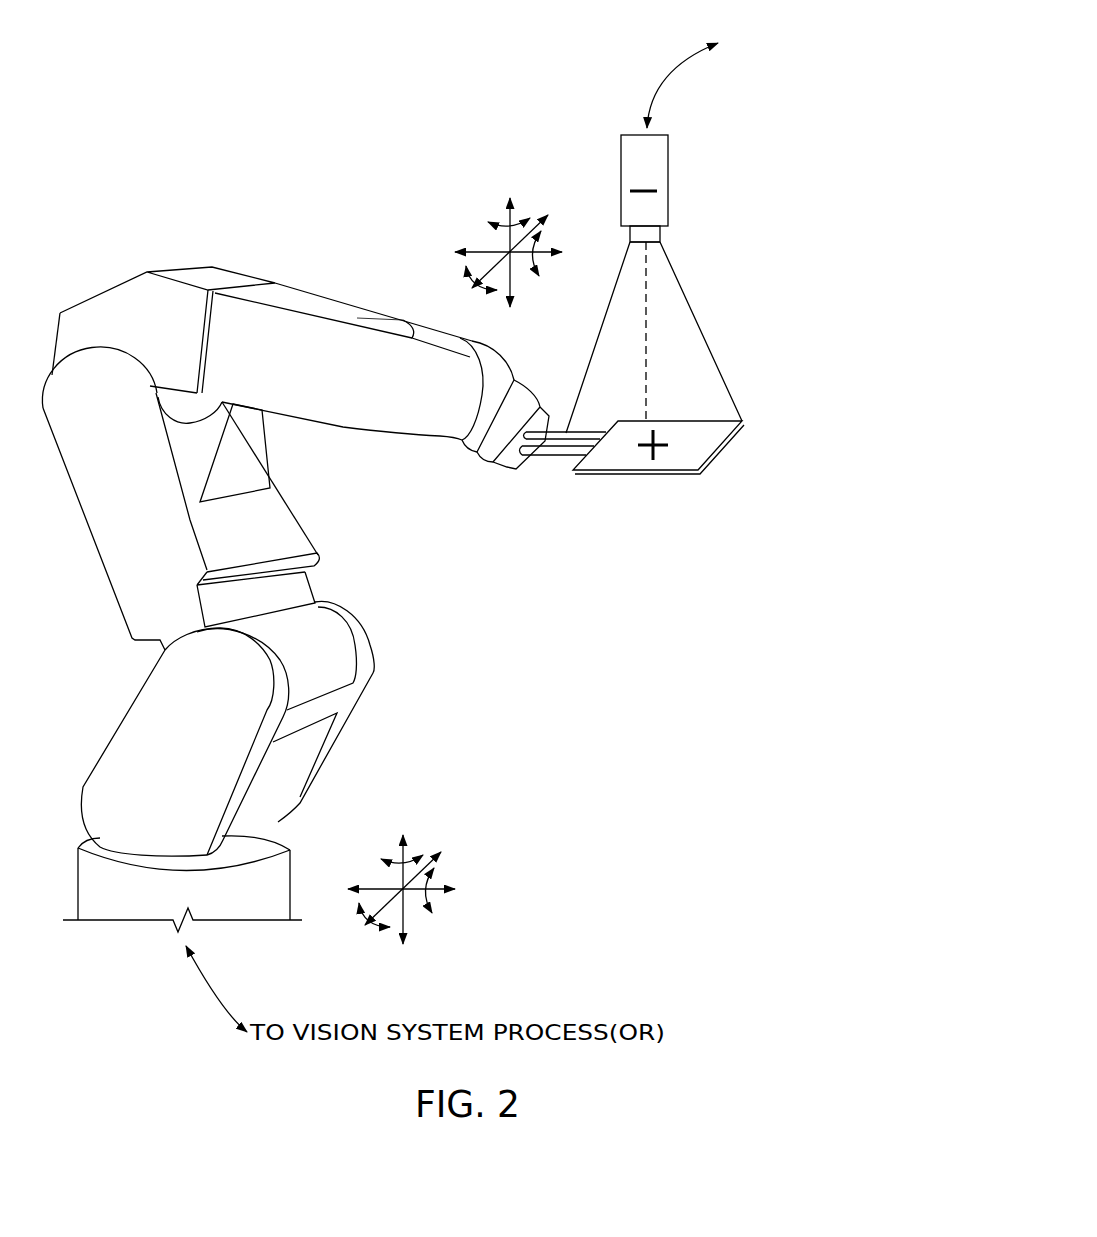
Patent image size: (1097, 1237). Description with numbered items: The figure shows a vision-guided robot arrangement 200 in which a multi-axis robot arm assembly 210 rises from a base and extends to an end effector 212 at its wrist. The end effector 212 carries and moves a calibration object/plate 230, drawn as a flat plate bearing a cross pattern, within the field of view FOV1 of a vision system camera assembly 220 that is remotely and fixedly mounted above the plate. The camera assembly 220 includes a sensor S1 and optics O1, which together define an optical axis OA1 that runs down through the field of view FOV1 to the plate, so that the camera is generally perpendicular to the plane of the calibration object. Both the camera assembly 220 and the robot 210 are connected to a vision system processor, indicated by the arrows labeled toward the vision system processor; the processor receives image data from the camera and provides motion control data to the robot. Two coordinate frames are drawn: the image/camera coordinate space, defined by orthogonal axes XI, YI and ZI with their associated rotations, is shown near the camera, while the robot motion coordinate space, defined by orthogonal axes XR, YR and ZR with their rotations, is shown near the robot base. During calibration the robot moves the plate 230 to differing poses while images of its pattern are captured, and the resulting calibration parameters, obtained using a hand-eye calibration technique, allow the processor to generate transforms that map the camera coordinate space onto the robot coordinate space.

The vision-guided robot arrangement 200 is at (522, 122).
The multi-axis robot arm assembly 210 is at (291, 281).
The end effector 212 is at (502, 474).
The vision system camera assembly 220 is at (695, 157).
The calibration object/plate 230 is at (691, 442).
The sensor S1 is at (659, 191).
The optics O1 is at (668, 234).
The optical axis OA1 is at (649, 301).
The field of view FOV1 is at (723, 365).
The image/camera coordinate space X axis XI is at (550, 221).
The image/camera coordinate space Y axis YI is at (478, 250).
The image/camera coordinate space Z axis ZI is at (519, 220).
The robot coordinate space X axis XR is at (468, 845).
The robot coordinate space Y axis YR is at (359, 855).
The robot coordinate space Z axis ZR is at (428, 826).